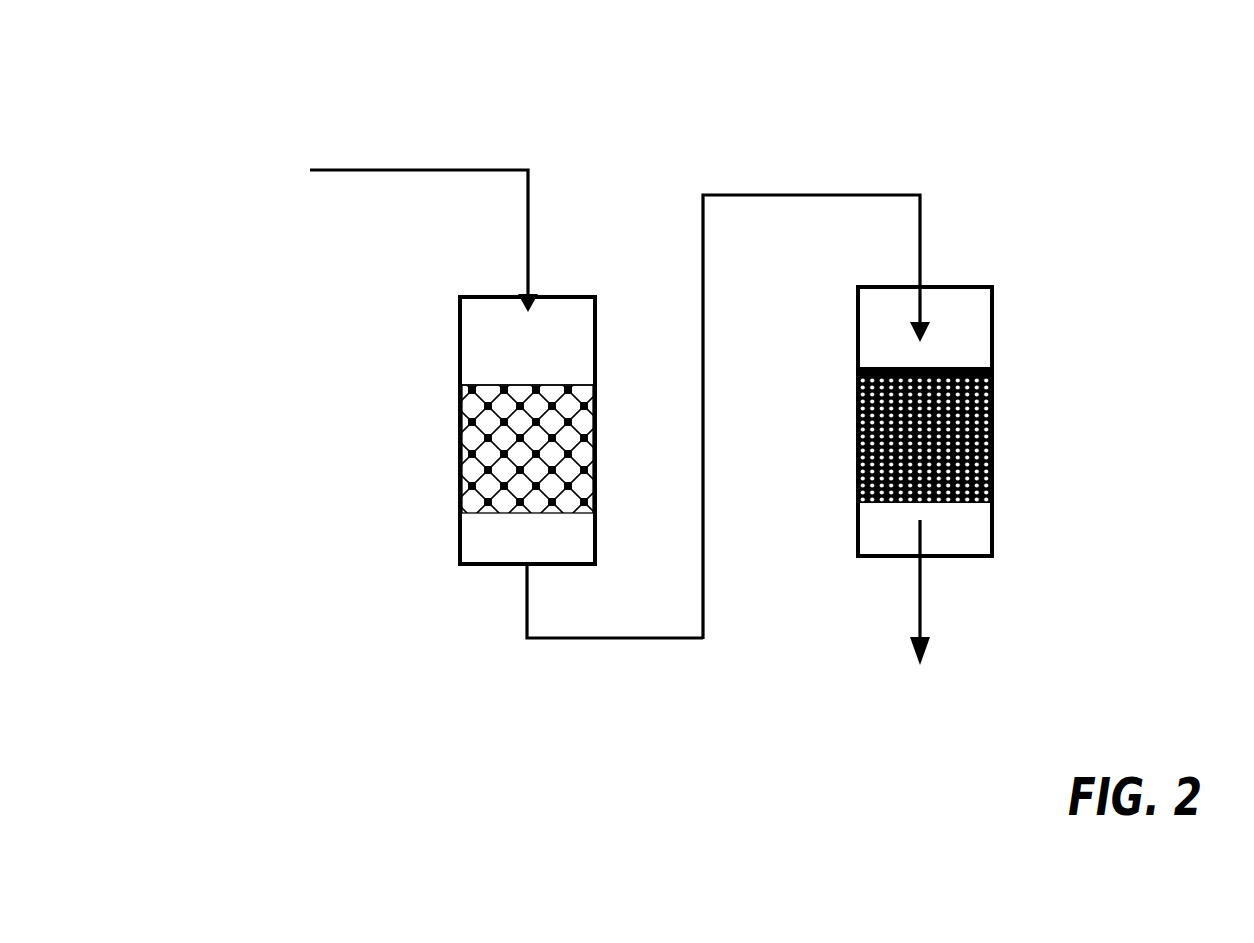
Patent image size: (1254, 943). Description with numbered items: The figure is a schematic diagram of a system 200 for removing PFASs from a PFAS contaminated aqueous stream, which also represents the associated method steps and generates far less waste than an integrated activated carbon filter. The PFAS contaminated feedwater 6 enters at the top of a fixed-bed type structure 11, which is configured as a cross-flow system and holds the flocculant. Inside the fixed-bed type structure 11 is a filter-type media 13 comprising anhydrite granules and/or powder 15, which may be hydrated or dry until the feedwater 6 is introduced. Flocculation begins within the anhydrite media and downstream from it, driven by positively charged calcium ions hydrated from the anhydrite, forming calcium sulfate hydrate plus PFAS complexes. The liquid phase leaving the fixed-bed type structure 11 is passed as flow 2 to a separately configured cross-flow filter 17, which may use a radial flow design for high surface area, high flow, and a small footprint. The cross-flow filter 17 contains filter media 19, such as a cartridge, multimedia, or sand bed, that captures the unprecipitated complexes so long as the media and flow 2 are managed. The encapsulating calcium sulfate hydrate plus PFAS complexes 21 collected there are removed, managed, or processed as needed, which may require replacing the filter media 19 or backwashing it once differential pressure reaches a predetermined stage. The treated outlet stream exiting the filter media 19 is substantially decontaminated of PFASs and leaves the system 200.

The PFAS contaminated feedwater 6 is at (375, 183).
The fixed-bed type structure 11 is at (441, 402).
The anhydrite granules and/or powder 15 is at (527, 368).
The filter-type media 13 is at (434, 449).
The flow 2 is at (615, 601).
The system 200 is at (762, 239).
The filter media 19 is at (925, 421).
The cross-flow filter 17 is at (1024, 435).
The encapsulating calcium sulfate hydrate+PFAS complexes 21 is at (962, 361).